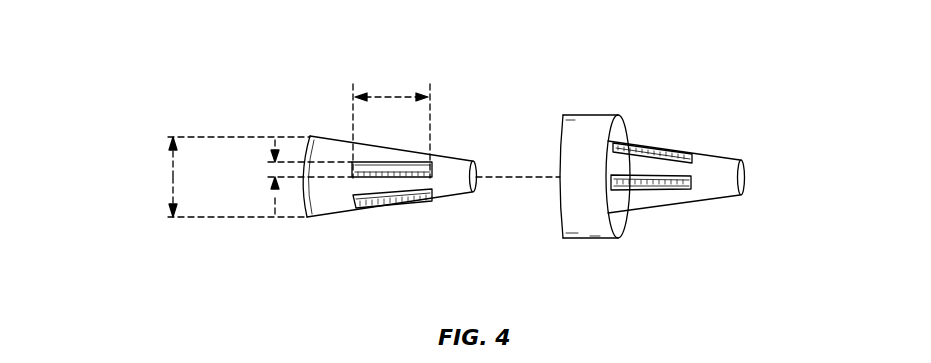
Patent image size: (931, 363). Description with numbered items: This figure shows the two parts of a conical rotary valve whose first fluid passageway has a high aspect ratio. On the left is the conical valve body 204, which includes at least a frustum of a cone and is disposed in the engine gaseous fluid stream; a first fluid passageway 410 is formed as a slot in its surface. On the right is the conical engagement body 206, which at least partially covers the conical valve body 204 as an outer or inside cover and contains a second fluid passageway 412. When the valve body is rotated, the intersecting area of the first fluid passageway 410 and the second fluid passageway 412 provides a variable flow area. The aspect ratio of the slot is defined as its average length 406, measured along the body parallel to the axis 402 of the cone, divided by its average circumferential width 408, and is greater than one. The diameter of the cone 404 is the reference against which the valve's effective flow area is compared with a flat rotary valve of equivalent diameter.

The conical valve body 204 is at (392, 246).
The conical engagement body 206 is at (669, 238).
The axis 402 is at (515, 180).
The diameter of the cone 404 is at (172, 178).
The average length 406 is at (389, 94).
The average circumferential width 408 is at (270, 170).
The first fluid passageway 410 is at (378, 162).
The second fluid passageway 412 is at (672, 152).